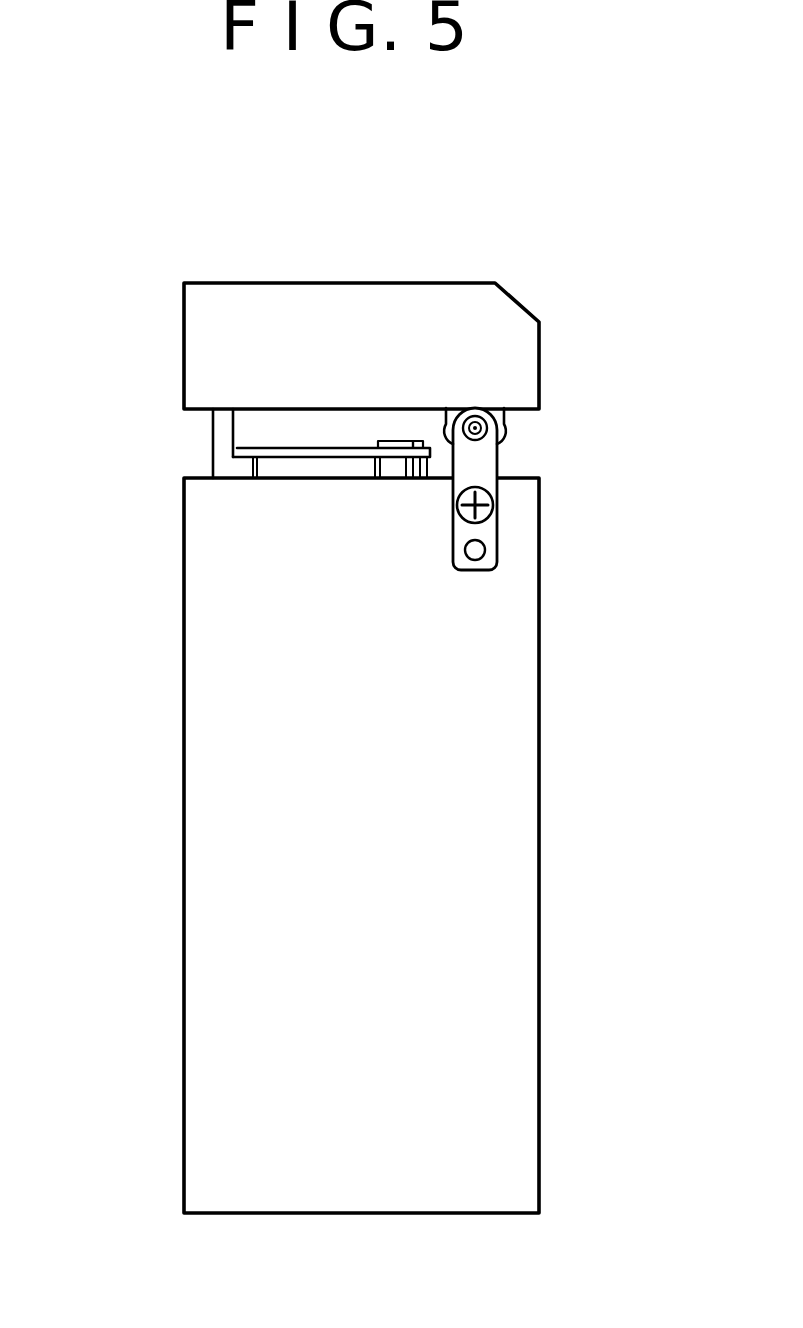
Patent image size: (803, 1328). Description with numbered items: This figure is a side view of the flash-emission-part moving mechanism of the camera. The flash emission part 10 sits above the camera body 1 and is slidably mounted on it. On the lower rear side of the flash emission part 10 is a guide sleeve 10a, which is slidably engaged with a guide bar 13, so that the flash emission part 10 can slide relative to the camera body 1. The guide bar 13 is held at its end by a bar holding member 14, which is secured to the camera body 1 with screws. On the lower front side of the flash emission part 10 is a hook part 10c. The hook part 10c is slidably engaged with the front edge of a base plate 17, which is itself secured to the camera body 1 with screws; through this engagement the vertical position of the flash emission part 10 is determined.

The camera body 1 is at (527, 698).
The flash emission part 10 is at (392, 308).
The guide sleeve 10a is at (503, 420).
The hook part 10c is at (217, 438).
The guide bar 13 is at (497, 448).
The bar holding member 14 is at (488, 468).
The base plate 17 is at (303, 455).